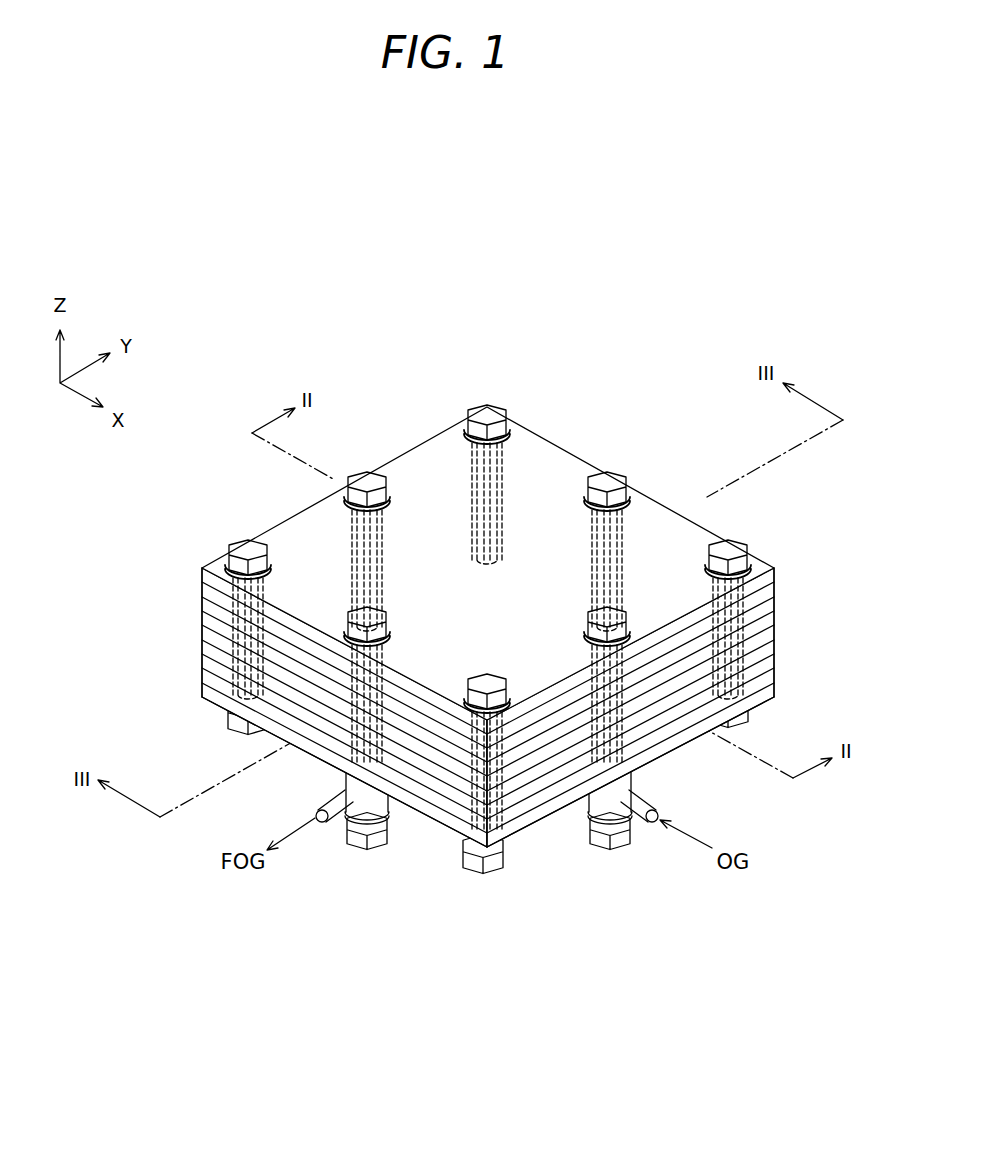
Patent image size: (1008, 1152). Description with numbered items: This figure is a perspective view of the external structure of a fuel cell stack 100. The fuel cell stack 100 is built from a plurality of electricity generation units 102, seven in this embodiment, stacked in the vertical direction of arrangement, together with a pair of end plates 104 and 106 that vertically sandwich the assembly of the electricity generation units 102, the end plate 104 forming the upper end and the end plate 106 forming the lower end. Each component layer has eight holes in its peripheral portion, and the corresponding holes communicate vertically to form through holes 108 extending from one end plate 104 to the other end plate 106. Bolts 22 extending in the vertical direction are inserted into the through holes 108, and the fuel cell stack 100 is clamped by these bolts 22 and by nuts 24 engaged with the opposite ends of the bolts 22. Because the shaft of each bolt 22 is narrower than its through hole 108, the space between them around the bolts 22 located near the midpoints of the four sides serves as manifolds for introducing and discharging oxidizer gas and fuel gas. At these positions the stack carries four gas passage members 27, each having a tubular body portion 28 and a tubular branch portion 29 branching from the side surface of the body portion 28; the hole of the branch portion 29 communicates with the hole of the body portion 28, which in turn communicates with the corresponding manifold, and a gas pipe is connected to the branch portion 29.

The fuel cell stack 100 is at (537, 584).
The electricity generation units 102 is at (777, 675).
The end plate 104 is at (778, 570).
The end plate 106 is at (778, 690).
The bolts 22 is at (515, 458).
The nuts 24 is at (508, 408).
The through holes 108 is at (515, 425).
The gas passage member 27 is at (445, 866).
The body portion 28 is at (345, 796).
The branch portion 29 is at (322, 816).